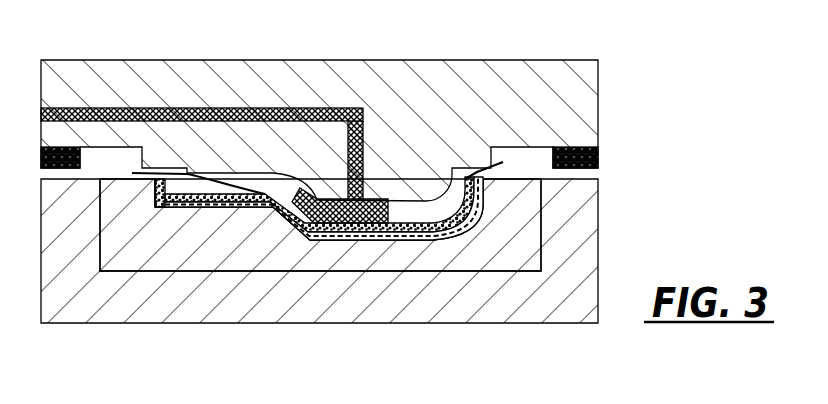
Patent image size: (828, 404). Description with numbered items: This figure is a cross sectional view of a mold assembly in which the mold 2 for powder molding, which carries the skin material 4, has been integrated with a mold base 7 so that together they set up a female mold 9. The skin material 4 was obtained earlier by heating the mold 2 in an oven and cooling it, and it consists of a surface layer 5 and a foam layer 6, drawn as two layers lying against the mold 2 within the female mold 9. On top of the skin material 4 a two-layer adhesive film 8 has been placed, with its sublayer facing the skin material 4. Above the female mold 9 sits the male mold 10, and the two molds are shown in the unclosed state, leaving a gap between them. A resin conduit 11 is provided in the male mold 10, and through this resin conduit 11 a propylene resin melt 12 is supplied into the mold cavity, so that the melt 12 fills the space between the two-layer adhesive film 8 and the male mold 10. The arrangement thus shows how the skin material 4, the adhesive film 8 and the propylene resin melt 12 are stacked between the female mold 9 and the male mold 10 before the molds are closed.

The mold for powder molding 2 is at (533, 238).
The skin material 4 is at (317, 272).
The surface layer 5 is at (187, 205).
The foam layer 6 is at (222, 203).
The mold base 7 is at (578, 254).
The two-layer adhesive film 8 is at (436, 232).
The female mold 9 is at (347, 251).
The male mold 10 is at (225, 72).
The resin conduit 11 is at (109, 120).
The propylene resin melt 12 is at (343, 240).